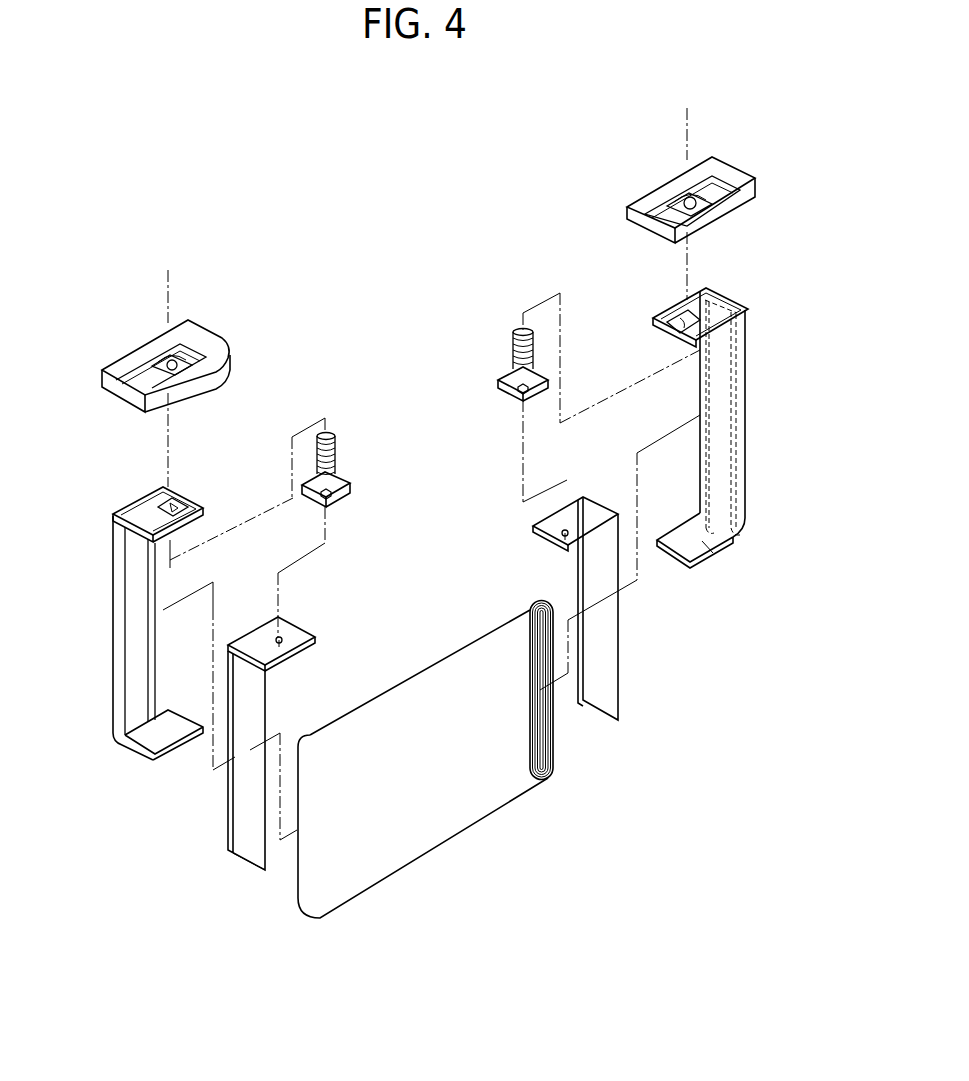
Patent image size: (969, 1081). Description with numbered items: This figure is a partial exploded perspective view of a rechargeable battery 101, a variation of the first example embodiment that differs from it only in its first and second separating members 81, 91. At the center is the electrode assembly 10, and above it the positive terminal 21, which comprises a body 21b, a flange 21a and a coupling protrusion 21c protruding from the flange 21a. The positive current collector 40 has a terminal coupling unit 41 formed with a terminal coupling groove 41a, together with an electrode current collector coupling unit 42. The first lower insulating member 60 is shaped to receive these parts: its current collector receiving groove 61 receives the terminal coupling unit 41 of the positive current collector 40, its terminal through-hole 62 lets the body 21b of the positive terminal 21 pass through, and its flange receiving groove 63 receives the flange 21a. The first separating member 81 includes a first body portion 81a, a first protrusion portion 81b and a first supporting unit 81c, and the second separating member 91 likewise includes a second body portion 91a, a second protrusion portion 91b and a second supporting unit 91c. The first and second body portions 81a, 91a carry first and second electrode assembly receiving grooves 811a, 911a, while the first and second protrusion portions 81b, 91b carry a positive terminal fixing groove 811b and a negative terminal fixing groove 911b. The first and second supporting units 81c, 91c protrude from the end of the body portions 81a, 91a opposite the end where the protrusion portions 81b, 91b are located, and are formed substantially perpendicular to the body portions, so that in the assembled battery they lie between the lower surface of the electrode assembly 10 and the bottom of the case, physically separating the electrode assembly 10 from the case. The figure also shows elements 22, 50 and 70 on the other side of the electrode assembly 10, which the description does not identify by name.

The rechargeable battery 101 is at (360, 208).
The electrode assembly 10 is at (565, 762).
The positive terminal 21 is at (364, 473).
The flange 21a is at (348, 487).
The body 21b is at (336, 458).
The coupling protrusion 21c is at (330, 500).
The second fastening member 22 is at (502, 352).
The positive current collector 40 is at (264, 718).
The terminal coupling unit 41 is at (256, 630).
The terminal coupling groove 41a is at (284, 642).
The electrode current collector coupling unit 42 is at (238, 829).
The second end plate 50 is at (628, 699).
The first lower insulating member 60 is at (153, 380).
The current collector receiving groove 61 is at (130, 392).
The terminal through-hole 62 is at (182, 367).
The flange receiving groove 63 is at (175, 370).
The second nut member 70 is at (746, 160).
The first separating member 81 is at (148, 642).
The first body portion 81a is at (93, 638).
The first protrusion portion 81b is at (128, 514).
The first supporting unit 81c is at (168, 742).
The first electrode assembly receiving groove 811a is at (138, 680).
The positive terminal fixing groove 811b is at (190, 506).
The second separating member 91 is at (689, 431).
The second body portion 91a is at (715, 414).
The second protrusion portion 91b is at (652, 320).
The second supporting unit 91c is at (683, 488).
The second electrode assembly receiving groove 911a is at (720, 402).
The negative terminal fixing groove 911b is at (675, 330).